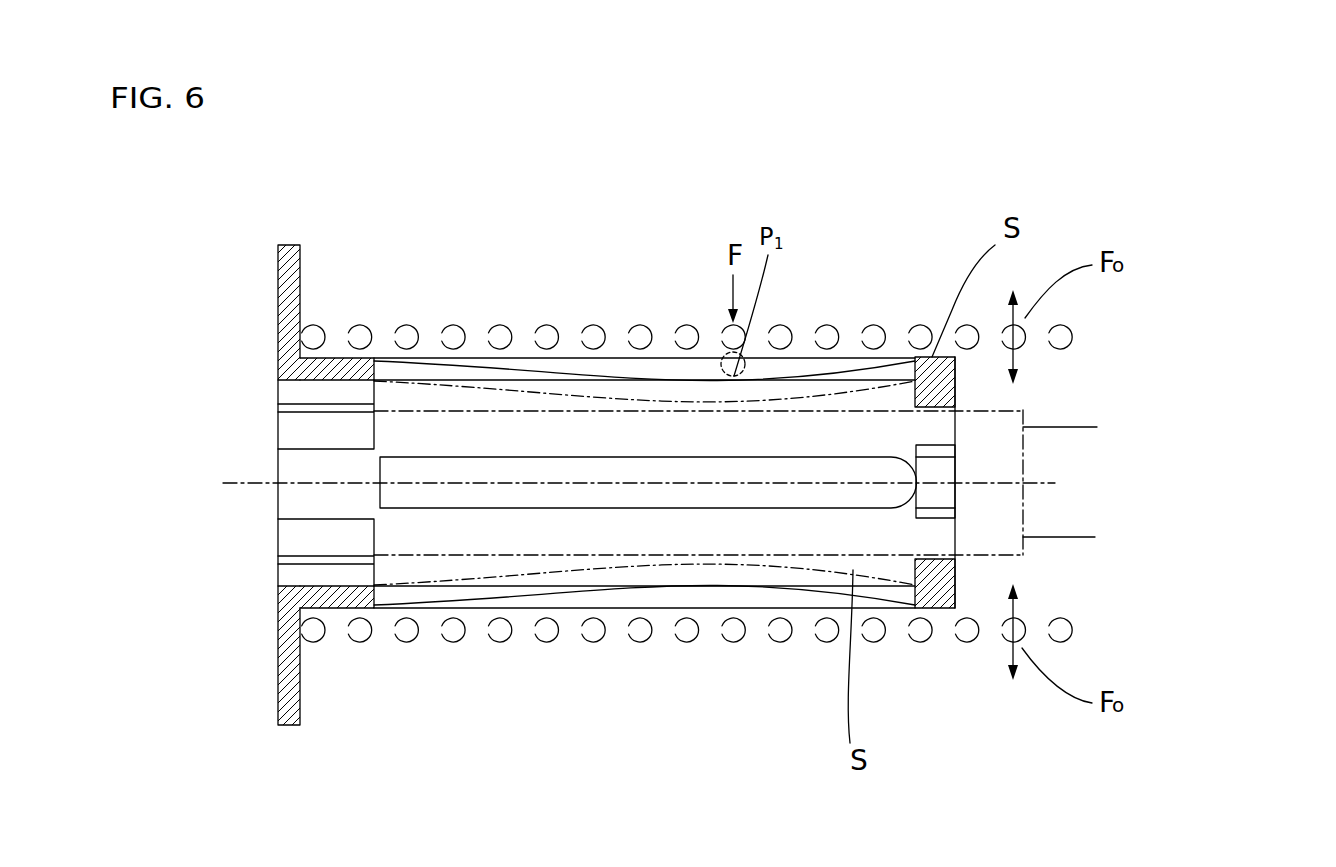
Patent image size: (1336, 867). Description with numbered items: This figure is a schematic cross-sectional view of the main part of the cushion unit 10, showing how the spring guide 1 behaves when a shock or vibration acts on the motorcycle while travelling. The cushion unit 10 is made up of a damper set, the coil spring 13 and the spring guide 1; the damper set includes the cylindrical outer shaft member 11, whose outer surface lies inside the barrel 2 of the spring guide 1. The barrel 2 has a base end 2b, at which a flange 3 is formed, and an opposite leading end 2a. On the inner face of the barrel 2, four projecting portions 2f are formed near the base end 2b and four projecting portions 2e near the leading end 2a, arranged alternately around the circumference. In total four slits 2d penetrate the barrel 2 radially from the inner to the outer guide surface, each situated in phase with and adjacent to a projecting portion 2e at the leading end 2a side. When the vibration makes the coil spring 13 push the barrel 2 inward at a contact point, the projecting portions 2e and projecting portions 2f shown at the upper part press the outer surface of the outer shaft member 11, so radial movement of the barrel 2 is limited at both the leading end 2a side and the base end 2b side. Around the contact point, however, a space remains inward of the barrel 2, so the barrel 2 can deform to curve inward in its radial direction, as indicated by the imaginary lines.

The spring guide 1 is at (535, 598).
The barrel 2 is at (662, 346).
The leading end 2a is at (955, 515).
The base end 2b is at (334, 358).
The slits 2d is at (554, 372).
The projecting portions 2e is at (937, 411).
The projecting portions 2f is at (320, 391).
The flange 3 is at (300, 258).
The cushion unit 10 is at (876, 292).
The outer shaft member 11 is at (1023, 450).
The coil spring 13 is at (412, 328).